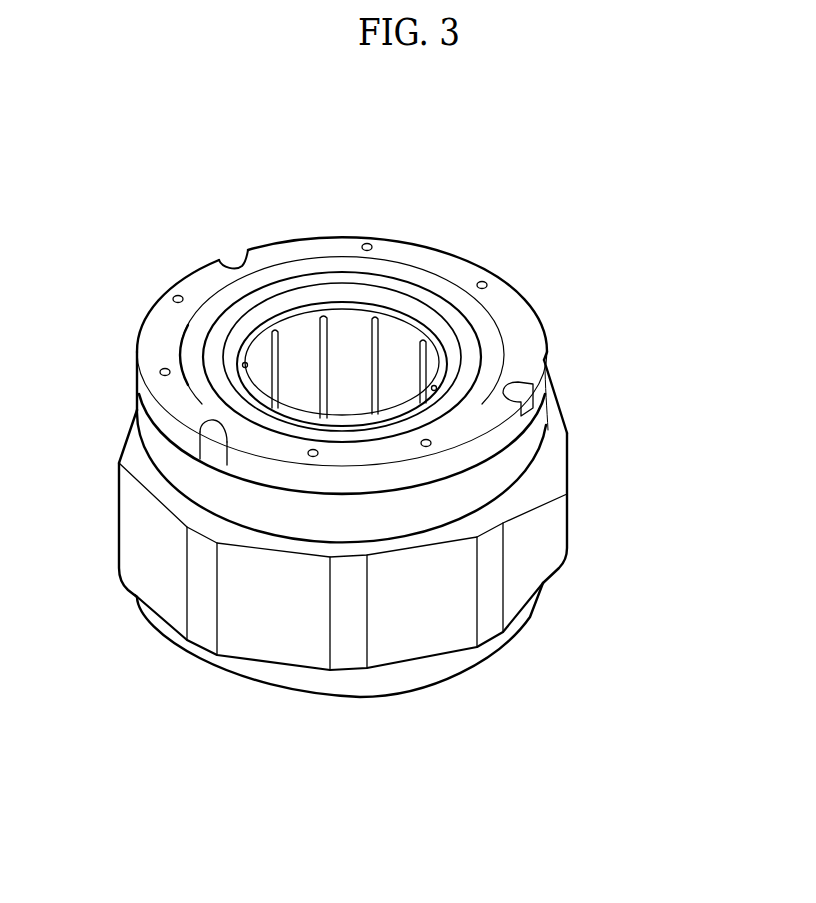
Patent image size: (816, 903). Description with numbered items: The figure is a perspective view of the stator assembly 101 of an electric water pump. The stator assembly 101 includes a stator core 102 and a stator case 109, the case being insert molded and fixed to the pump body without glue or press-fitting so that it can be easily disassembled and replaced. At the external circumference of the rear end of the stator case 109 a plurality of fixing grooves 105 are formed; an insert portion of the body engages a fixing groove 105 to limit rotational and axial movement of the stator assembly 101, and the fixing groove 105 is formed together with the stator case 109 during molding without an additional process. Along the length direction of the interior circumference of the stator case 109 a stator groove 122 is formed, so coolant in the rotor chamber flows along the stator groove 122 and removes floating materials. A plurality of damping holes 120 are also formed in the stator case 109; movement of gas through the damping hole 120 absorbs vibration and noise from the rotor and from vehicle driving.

The stator assembly 101 is at (522, 210).
The stator core 102 is at (407, 622).
The fixing groove 105 is at (222, 455).
The stator case 109 is at (505, 308).
The damping hole 120 is at (481, 282).
The stator groove 122 is at (322, 315).